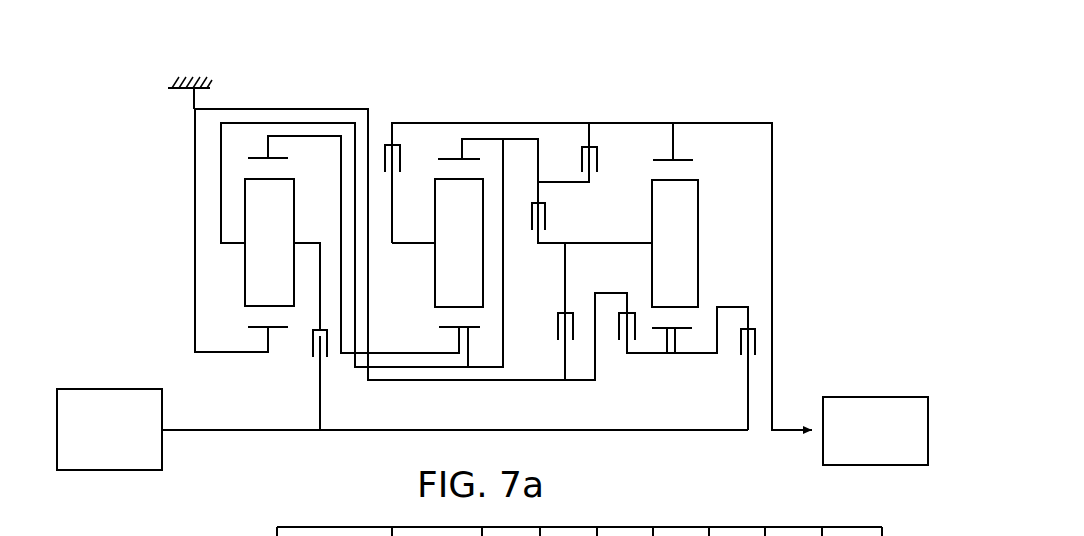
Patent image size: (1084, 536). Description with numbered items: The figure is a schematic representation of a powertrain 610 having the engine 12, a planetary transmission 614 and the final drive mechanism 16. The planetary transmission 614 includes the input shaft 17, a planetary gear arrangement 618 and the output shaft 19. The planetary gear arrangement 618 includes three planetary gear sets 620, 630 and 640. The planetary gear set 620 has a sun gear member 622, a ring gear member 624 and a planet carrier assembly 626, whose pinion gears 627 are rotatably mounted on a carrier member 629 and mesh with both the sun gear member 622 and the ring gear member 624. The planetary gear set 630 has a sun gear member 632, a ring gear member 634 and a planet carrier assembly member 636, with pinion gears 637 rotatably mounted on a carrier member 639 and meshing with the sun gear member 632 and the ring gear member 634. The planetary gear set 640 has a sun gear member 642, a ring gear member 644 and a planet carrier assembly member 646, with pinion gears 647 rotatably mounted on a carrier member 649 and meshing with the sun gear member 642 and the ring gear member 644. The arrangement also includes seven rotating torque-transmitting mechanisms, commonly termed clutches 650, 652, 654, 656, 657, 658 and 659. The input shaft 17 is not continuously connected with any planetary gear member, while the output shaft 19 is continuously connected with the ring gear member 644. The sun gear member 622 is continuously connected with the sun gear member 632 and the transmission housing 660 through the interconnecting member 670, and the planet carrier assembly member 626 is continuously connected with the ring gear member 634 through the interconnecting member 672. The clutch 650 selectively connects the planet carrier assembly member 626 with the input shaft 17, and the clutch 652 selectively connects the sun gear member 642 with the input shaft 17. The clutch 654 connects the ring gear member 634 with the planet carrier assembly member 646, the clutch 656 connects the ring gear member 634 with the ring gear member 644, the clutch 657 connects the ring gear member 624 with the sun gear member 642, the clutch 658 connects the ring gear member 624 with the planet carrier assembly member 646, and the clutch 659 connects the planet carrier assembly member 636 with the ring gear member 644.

The engine 12 is at (128, 374).
The final drive mechanism 16 is at (860, 382).
The input shaft 17 is at (222, 432).
The output shaft 19 is at (786, 433).
The powertrain 610 is at (162, 188).
The planetary transmission 614 is at (517, 105).
The planetary gear arrangement 618 is at (608, 105).
The planetary gear set 620 is at (258, 333).
The sun gear member 622 is at (279, 330).
The ring gear member 624 is at (259, 156).
The planet carrier assembly 626 is at (236, 256).
The pinion gears 627 is at (283, 233).
The carrier member 629 is at (233, 247).
The planetary gear set 630 is at (452, 331).
The sun gear member 632 is at (470, 331).
The ring gear member 634 is at (466, 140).
The planet carrier assembly member 636 is at (433, 282).
The pinion gears 637 is at (473, 231).
The carrier member 639 is at (433, 248).
The planetary gear set 640 is at (667, 331).
The sun gear member 642 is at (687, 331).
The ring gear member 644 is at (673, 150).
The planet carrier assembly member 646 is at (641, 237).
The pinion gears 647 is at (687, 231).
The carrier member 649 is at (628, 243).
The clutch 650 is at (329, 359).
The clutch 652 is at (760, 335).
The clutch 654 is at (536, 233).
The clutch 656 is at (588, 146).
The clutch 657 is at (614, 331).
The clutch 658 is at (552, 331).
The clutch 659 is at (404, 146).
The transmission housing 660 is at (178, 84).
The interconnecting member 670 is at (194, 228).
The interconnecting member 672 is at (305, 122).